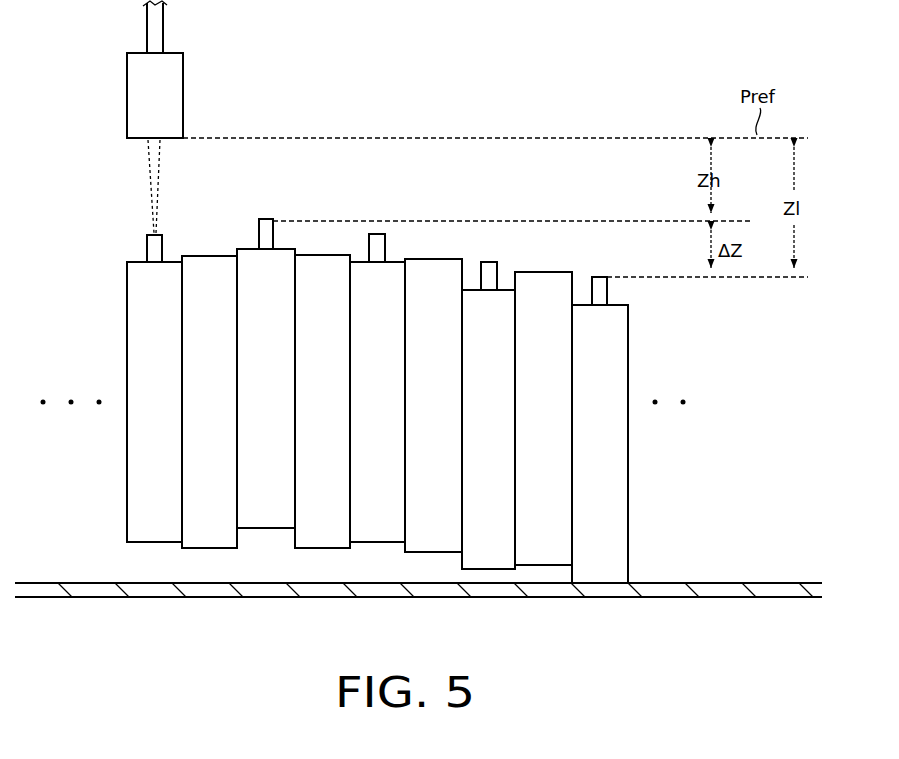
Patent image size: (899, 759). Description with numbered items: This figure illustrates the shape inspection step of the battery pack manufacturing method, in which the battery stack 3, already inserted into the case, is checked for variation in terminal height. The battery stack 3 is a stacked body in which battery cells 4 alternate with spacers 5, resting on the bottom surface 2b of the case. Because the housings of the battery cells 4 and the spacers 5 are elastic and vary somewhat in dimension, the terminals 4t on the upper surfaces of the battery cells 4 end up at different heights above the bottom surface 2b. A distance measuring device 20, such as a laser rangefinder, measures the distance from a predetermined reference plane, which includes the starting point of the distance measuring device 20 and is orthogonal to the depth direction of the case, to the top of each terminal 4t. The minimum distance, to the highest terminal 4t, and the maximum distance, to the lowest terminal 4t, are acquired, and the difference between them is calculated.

The distance measuring device 20 is at (108, 99).
The terminal 4t is at (152, 248).
The battery stack 3 is at (363, 390).
The battery cell 4 is at (349, 390).
The spacer 5 is at (221, 422).
The bottom surface 2b is at (47, 600).